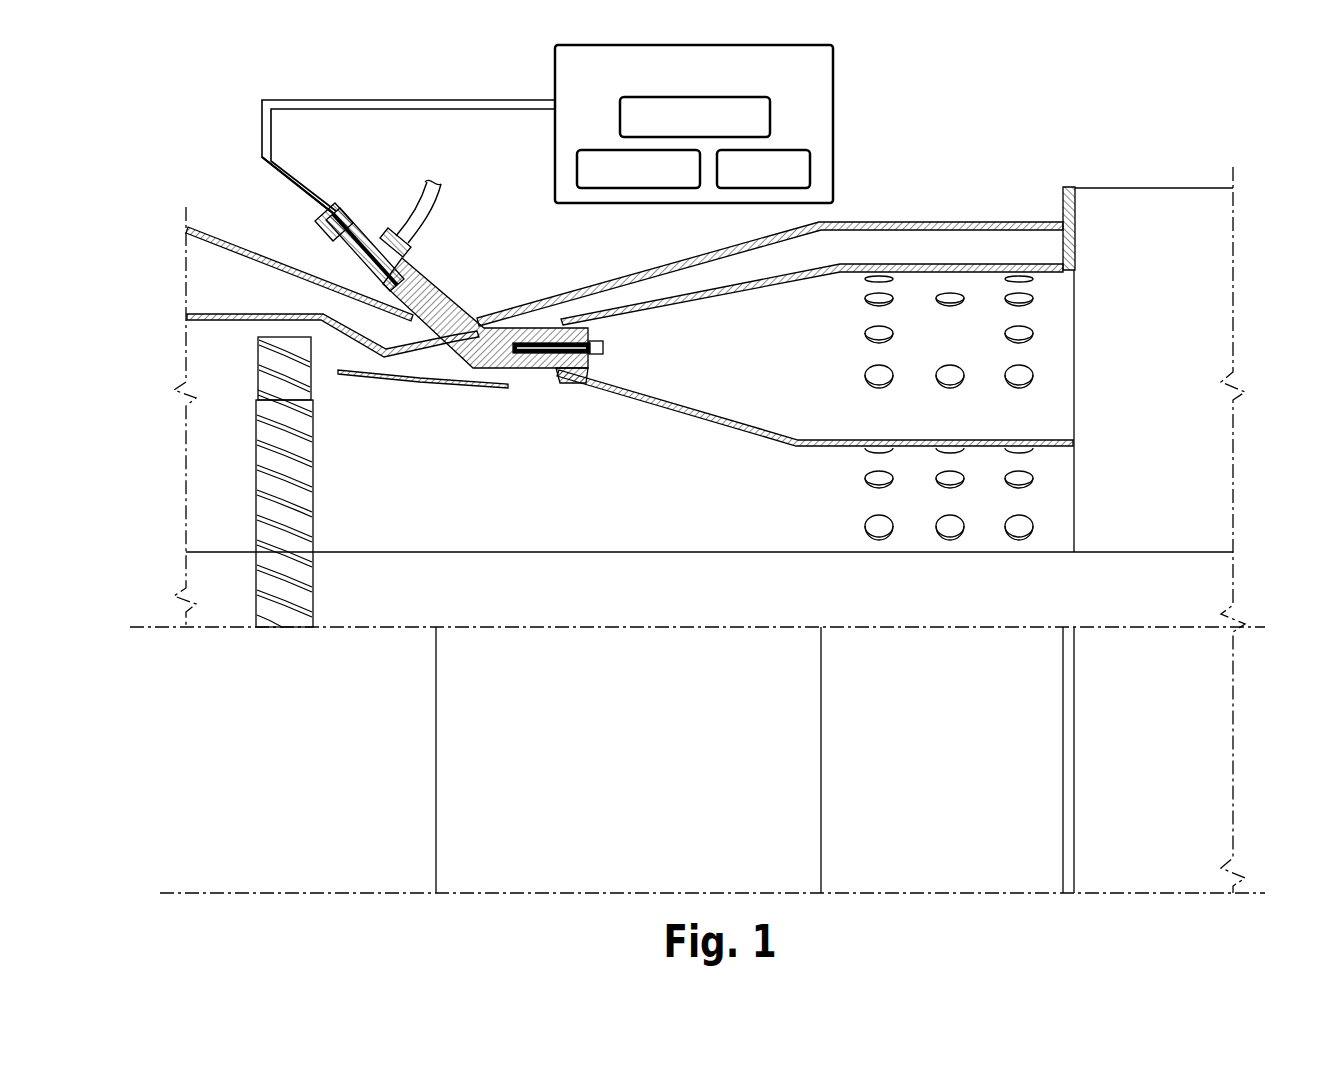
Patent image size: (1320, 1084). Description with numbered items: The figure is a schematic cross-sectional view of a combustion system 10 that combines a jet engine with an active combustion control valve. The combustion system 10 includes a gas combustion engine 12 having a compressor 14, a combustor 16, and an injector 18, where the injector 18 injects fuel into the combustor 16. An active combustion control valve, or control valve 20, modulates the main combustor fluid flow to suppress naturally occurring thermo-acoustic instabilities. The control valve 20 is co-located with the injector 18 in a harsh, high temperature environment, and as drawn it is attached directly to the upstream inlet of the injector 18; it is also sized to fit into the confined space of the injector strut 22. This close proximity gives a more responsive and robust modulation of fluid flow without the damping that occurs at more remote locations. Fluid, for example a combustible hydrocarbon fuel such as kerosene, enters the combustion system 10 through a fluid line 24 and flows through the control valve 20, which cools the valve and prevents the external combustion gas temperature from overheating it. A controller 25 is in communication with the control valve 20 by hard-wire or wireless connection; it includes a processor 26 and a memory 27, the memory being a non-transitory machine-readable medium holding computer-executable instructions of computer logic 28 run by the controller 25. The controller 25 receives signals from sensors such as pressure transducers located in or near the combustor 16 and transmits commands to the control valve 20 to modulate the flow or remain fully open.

The combustion system 10 is at (214, 84).
The gas combustion engine 12 is at (983, 175).
The compressor 14 is at (292, 428).
The combustor 16 is at (972, 327).
The injector 18 is at (600, 343).
The control valve 20 is at (360, 194).
The injector strut 22 is at (450, 294).
The fluid line 24 is at (420, 216).
The controller 25 is at (833, 93).
The processor 26 is at (620, 111).
The memory 27 is at (577, 170).
The computer logic 28 is at (810, 170).